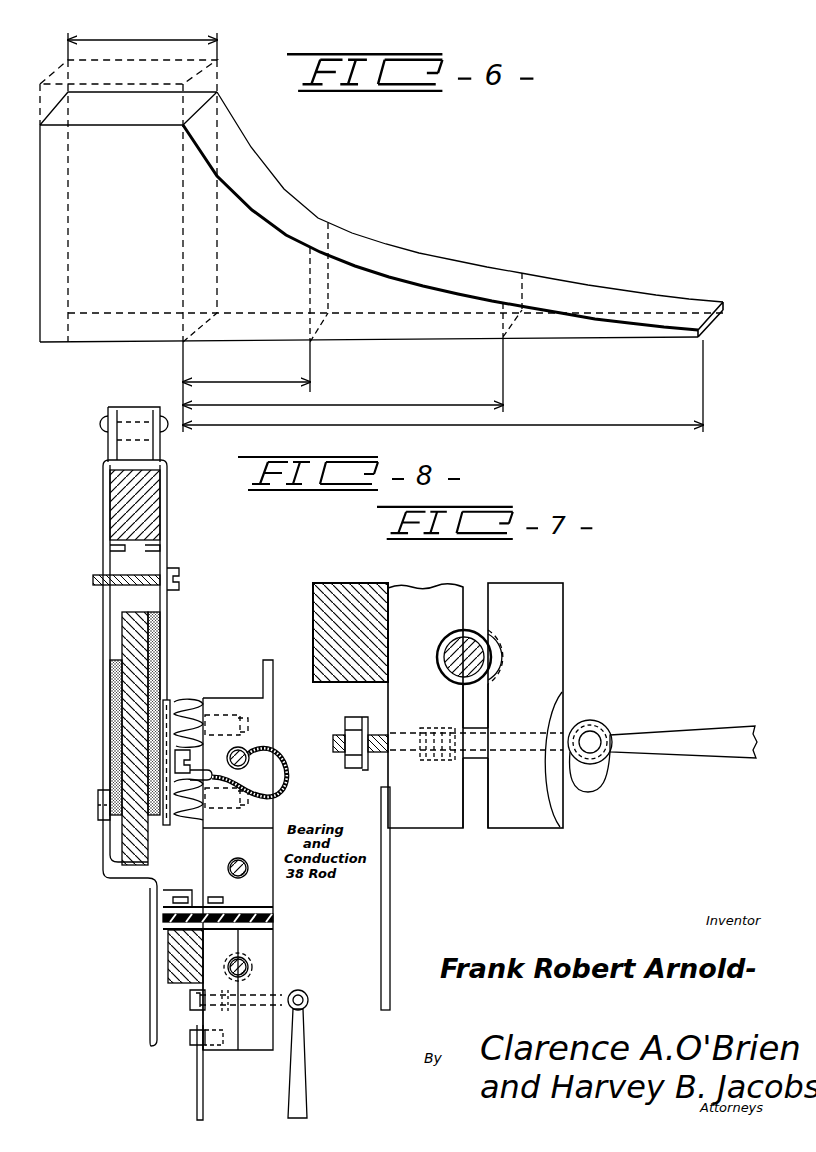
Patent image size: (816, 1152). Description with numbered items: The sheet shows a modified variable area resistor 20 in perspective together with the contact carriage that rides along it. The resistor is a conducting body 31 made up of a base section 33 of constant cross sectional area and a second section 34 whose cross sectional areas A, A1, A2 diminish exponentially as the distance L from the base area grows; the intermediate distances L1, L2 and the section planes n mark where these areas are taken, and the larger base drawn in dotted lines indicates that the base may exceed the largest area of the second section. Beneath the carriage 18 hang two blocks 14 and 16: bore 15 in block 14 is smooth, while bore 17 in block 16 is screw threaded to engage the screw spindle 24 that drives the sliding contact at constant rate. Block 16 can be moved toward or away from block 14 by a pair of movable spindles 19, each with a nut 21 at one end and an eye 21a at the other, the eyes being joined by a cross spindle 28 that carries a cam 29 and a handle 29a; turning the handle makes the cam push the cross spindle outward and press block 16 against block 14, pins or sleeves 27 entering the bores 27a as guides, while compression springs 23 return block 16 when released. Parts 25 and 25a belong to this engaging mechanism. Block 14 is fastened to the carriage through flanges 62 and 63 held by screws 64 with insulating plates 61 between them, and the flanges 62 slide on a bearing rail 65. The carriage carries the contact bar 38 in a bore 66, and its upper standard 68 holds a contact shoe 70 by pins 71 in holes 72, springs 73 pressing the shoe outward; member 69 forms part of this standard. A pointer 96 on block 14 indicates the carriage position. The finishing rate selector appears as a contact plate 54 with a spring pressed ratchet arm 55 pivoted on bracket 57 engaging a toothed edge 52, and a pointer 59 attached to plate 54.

In FIG. 6, the variable area resistor 20 is at (348, 224).
In FIG. 6, the conducting body 31 is at (262, 341).
In FIG. 8, the conducting body 31 is at (160, 660).
In FIG. 6, the base section 33 is at (40, 243).
In FIG. 6, the second section 34 is at (430, 270).
In FIG. 7, the block 14 is at (437, 831).
In FIG. 8, the block 14 is at (228, 1052).
In FIG. 7, the bore 15 is at (447, 640).
In FIG. 7, the block 16 is at (535, 832).
In FIG. 8, the block 16 is at (258, 1052).
In FIG. 7, the screw threaded bore 17 is at (505, 640).
In FIG. 7, the carriage 18 is at (510, 852).
In FIG. 8, the carriage 18 is at (280, 896).
In FIG. 7, the movable spindles 19 is at (563, 822).
In FIG. 7, the head or nut 21 is at (352, 720).
In FIG. 7, the eye 21a is at (605, 730).
In FIG. 7, the compression springs 23 is at (431, 764).
In FIG. 7, the screw spindle 24 is at (470, 632).
In FIG. 8, the screw spindle 24 is at (250, 962).
In FIG. 7, the shaft 25 is at (390, 762).
In FIG. 7, the shaft end 25a is at (576, 733).
In FIG. 7, the pins or sleeves 27 is at (477, 760).
In FIG. 7, the bores 27a is at (443, 728).
In FIG. 7, the cross spindle 28 is at (604, 784).
In FIG. 7, the cam 29 is at (592, 794).
In FIG. 8, the cam 29 is at (300, 990).
In FIG. 7, the handle 29a is at (688, 735).
In FIG. 8, the handle 29a is at (302, 1087).
In FIG. 8, the contact bar 38 is at (125, 614).
In FIG. 8, the toothed edge 52 is at (148, 530).
In FIG. 8, the contact plate 54 is at (165, 504).
In FIG. 8, the ratchet arm 55 is at (130, 415).
In FIG. 8, the bracket 57 is at (112, 444).
In FIG. 8, the pointer 59 is at (150, 1020).
In FIG. 8, the insulating plates 61 is at (163, 918).
In FIG. 8, the flanges 62 is at (163, 926).
In FIG. 8, the flanges 63 is at (165, 907).
In FIG. 8, the screws 64 is at (180, 897).
In FIG. 8, the bearing rail 65 is at (168, 963).
In FIG. 8, the bore 66 is at (227, 862).
In FIG. 8, the upper part of the carriage 68 is at (262, 722).
In FIG. 8, the insulating housing 69 is at (273, 670).
In FIG. 8, the contact shoe 70 is at (175, 700).
In FIG. 8, the pins 71 is at (222, 722).
In FIG. 8, the bores or holes 72 is at (252, 718).
In FIG. 8, the springs 73 is at (180, 722).
In FIG. 7, the pointer 96 is at (390, 952).
In FIG. 8, the pointer 96 is at (203, 1111).
In FIG. 6, the cross sectional area A is at (212, 74).
In FIG. 6, the cross sectional area A1 is at (322, 243).
In FIG. 6, the cross sectional area A2 is at (204, 144).
In FIG. 6, the normal section n is at (215, 96).
In FIG. 6, the distance L is at (443, 393).
In FIG. 6, the length L1 is at (189, 223).
In FIG. 6, the length L2 is at (343, 374).